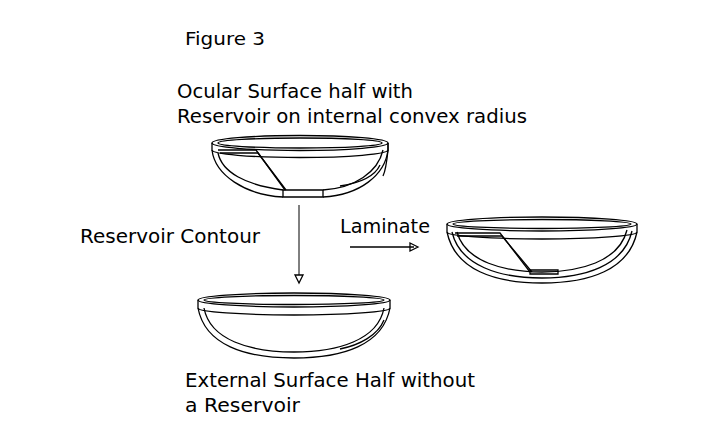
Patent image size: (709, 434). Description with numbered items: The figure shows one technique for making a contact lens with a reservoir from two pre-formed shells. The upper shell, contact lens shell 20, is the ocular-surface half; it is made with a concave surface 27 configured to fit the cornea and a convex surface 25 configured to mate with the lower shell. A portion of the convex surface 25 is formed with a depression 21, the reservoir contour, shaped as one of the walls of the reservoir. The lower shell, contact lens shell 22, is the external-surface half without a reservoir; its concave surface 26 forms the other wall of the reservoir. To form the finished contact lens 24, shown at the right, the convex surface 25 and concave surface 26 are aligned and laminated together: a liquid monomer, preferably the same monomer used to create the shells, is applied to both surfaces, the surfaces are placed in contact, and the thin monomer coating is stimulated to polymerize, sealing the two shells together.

The contact lens shell 20 is at (300, 167).
The depression 21 is at (246, 178).
The contact lens shell 22 is at (294, 325).
The finished contact lens 24 is at (542, 250).
The convex surface 25 is at (392, 152).
The concave surface 26 is at (363, 322).
The concave surface 27 is at (360, 163).